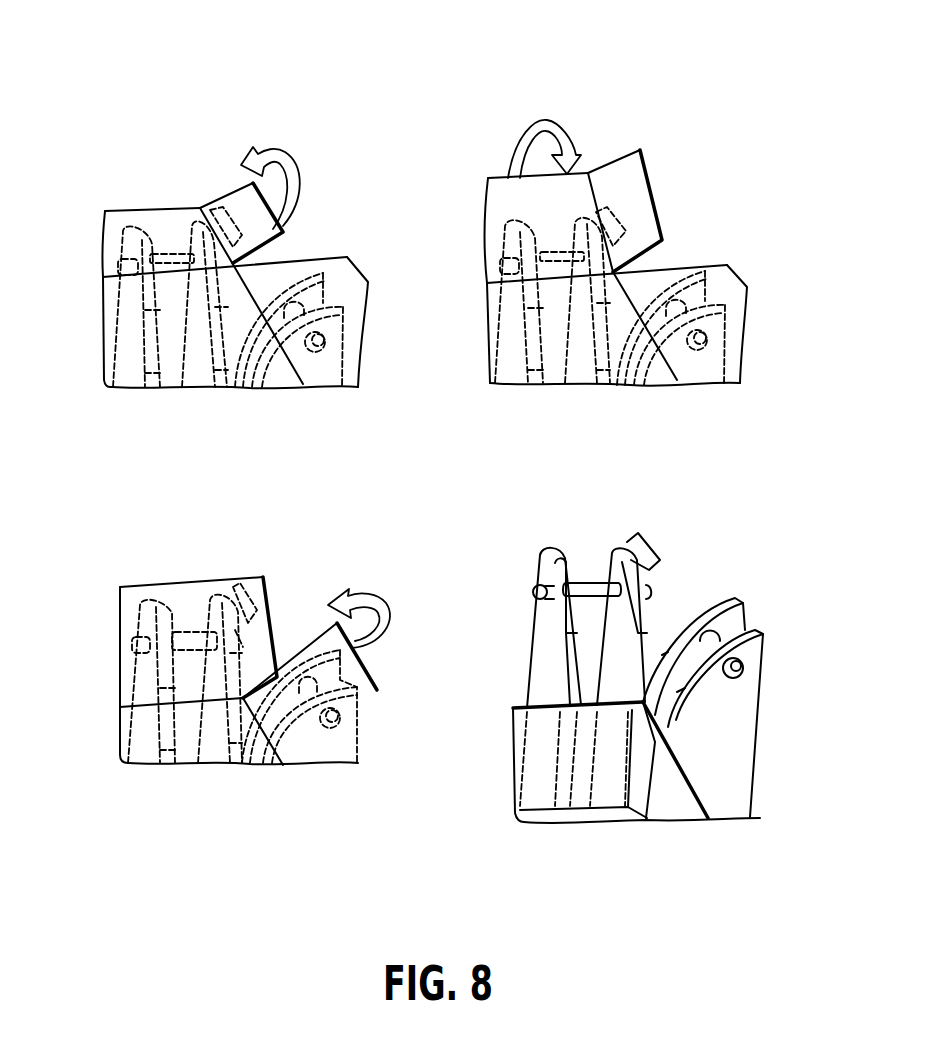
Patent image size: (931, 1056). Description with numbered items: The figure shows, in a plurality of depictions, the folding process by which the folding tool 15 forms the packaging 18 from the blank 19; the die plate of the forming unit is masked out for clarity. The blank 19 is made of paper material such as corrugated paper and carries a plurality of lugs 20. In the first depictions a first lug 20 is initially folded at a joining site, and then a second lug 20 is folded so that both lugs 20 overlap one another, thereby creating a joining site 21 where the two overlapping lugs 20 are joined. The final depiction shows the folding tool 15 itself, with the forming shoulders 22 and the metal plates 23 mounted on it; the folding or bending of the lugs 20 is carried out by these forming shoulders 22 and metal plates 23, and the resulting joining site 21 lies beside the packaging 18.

The folding tool 15 is at (713, 578).
The packaging 18 is at (607, 797).
The blank 19 is at (141, 200).
The lug 20 is at (230, 195).
The joining site 21 is at (643, 767).
The forming shoulder 22 is at (549, 553).
The metal plate 23 is at (638, 543).